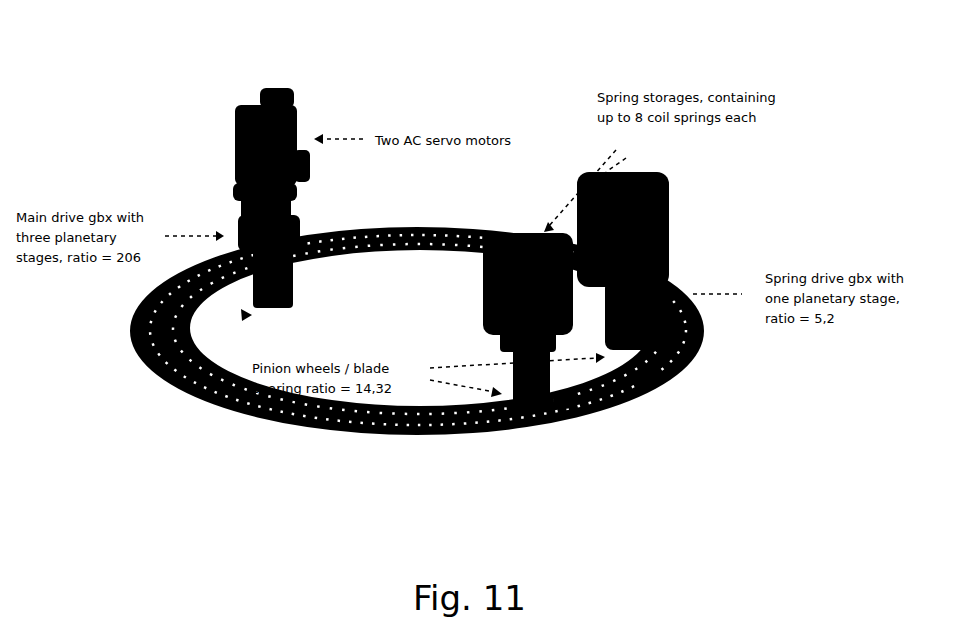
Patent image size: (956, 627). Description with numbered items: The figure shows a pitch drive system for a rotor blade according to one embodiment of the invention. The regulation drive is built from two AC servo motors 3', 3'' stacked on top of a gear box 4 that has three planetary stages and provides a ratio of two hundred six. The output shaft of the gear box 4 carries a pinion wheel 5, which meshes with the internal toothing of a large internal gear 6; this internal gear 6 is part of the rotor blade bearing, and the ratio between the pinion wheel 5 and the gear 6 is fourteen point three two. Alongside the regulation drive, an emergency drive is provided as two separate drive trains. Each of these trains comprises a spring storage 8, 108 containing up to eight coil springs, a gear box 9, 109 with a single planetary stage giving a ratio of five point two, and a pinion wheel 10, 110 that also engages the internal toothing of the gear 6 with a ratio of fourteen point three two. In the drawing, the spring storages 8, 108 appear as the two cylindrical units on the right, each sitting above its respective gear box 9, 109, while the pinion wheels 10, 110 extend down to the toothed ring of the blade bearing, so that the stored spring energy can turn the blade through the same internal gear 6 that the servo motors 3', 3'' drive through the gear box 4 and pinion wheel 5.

The AC servo motor 3' is at (304, 100).
The AC servo motor 3'' is at (227, 105).
The gear box 4 is at (304, 228).
The pinion wheel 5 is at (291, 304).
The internal gear 6 is at (136, 389).
The spring storage 8 is at (484, 301).
The gear box 9 is at (570, 407).
The pinion wheel 10 is at (517, 413).
The spring storage 108 is at (668, 213).
The gear box 109 is at (703, 337).
The pinion wheel 110 is at (664, 385).